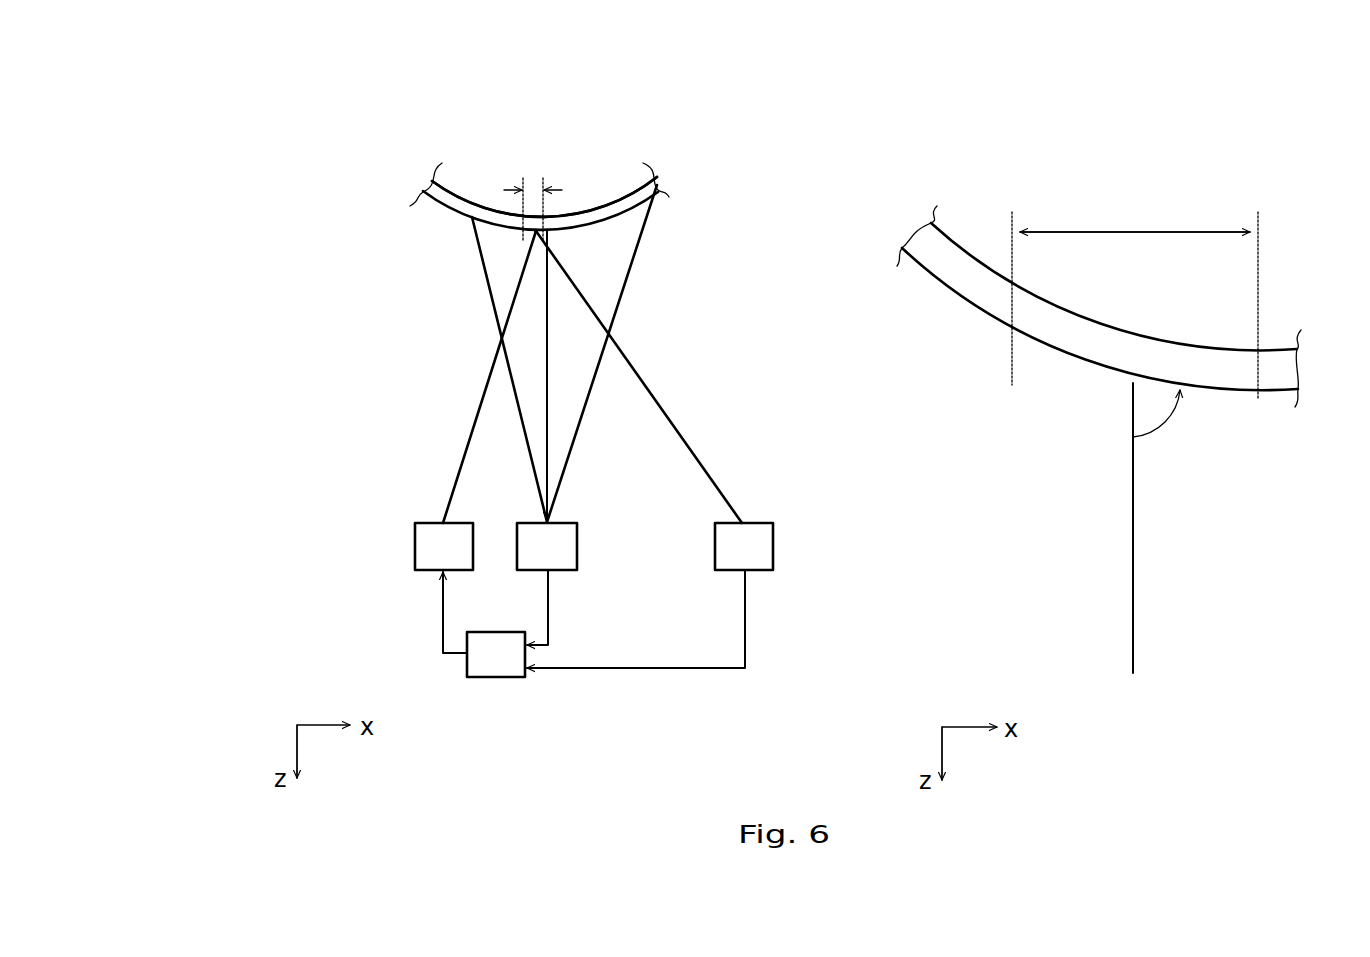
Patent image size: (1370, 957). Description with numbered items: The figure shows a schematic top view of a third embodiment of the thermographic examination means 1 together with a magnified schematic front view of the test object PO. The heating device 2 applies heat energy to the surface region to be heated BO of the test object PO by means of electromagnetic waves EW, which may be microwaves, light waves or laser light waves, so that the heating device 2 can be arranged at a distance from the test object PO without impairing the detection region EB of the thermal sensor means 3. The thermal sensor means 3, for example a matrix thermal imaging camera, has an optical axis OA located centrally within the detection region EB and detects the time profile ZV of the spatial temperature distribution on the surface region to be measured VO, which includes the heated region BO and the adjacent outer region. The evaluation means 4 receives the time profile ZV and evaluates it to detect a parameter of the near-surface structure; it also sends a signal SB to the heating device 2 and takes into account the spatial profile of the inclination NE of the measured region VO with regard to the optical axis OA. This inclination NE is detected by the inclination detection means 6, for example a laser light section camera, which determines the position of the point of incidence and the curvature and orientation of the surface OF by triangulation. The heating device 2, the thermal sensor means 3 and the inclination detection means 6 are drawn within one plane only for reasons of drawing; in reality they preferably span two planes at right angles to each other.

The thermographic examination means 1 is at (318, 121).
The heating device 2 is at (415, 548).
The thermal sensor means 3 is at (577, 548).
The evaluation means 4 is at (497, 679).
The inclination detection means 6 is at (773, 548).
The test object PO is at (617, 203).
The surface OF is at (446, 204).
The surface region to be measured VO is at (881, 274).
The surface region to be heated BO is at (530, 236).
The optical axis OA is at (548, 330).
The detection region EB is at (493, 312).
The electromagnetic waves EW is at (475, 430).
The control signal SB is at (443, 610).
The time profile ZV is at (548, 612).
The inclination NE is at (1172, 418).